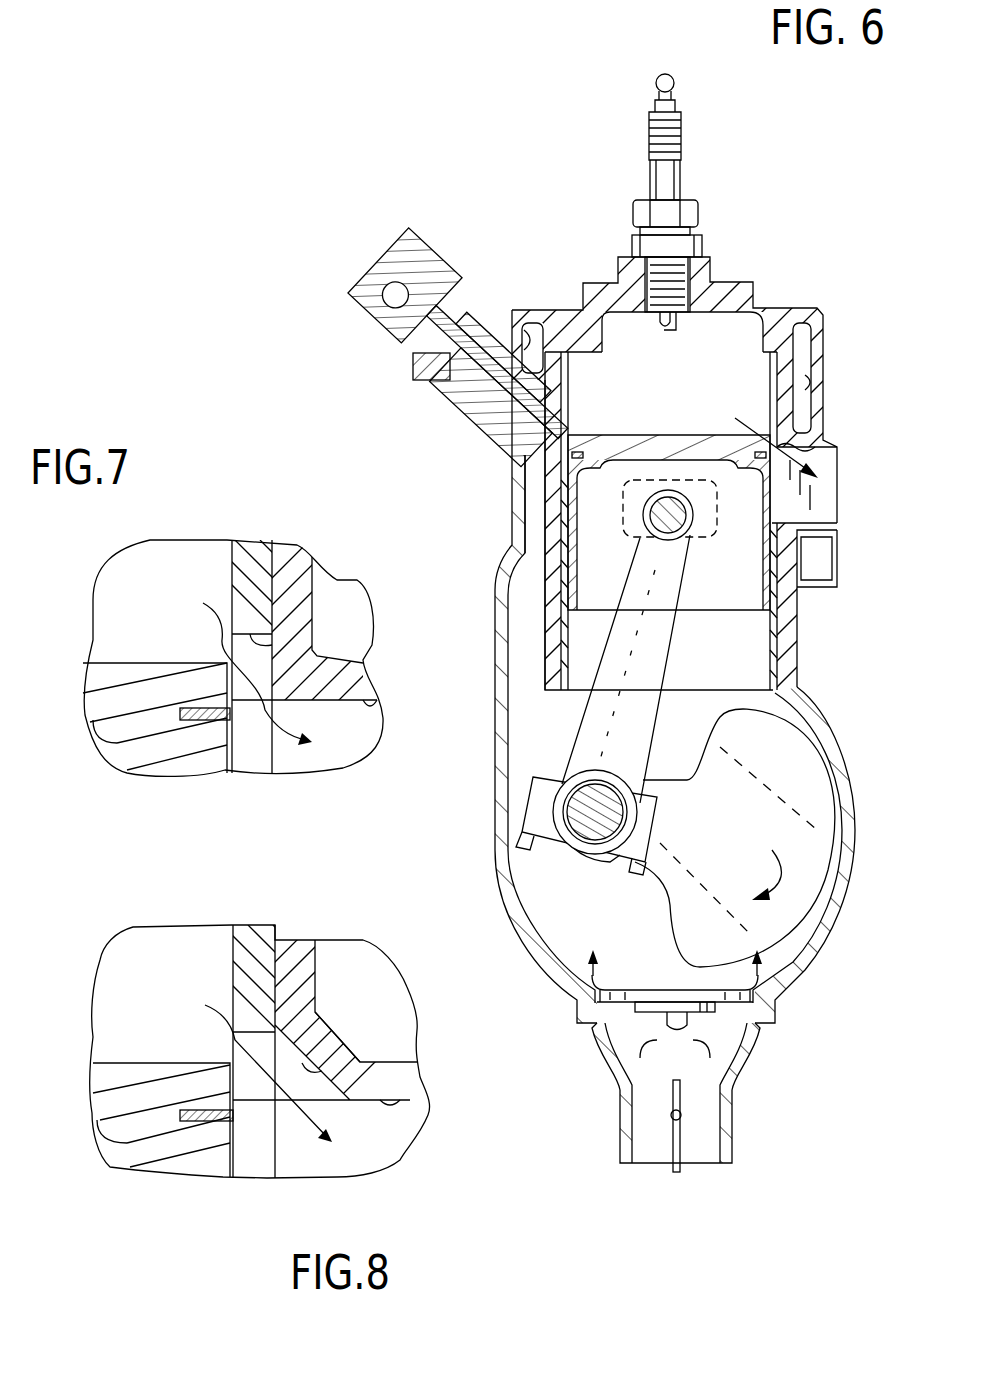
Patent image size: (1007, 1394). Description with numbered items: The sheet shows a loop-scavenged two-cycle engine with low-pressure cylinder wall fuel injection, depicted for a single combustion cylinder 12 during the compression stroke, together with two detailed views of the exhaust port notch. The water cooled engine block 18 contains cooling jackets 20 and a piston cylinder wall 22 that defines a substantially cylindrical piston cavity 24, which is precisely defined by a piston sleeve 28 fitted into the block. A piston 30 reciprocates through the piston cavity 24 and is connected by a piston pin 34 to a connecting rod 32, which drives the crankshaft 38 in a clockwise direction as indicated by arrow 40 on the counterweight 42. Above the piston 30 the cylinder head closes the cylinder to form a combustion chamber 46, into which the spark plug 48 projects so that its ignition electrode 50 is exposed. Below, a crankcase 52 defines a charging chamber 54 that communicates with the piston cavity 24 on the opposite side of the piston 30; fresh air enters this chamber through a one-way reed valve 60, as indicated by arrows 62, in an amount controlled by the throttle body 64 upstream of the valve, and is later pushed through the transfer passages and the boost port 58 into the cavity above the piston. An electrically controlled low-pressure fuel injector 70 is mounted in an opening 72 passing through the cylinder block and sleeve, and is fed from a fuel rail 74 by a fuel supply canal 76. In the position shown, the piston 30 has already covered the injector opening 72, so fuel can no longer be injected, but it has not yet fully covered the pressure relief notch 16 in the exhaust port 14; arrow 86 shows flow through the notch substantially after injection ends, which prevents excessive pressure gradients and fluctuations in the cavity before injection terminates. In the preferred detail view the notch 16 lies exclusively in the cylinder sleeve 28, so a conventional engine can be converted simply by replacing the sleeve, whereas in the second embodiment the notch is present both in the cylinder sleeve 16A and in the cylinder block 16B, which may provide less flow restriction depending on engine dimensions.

In FIG. 6, the combustion cylinder 12 is at (722, 372).
In FIG. 7, the combustion cylinder 12 is at (226, 552).
In FIG. 8, the combustion cylinder 12 is at (260, 1051).
In FIG. 6, the exhaust port 14 is at (806, 453).
In FIG. 7, the exhaust port 14 is at (374, 700).
In FIG. 8, the exhaust port 14 is at (410, 1096).
In FIG. 6, the pressure relief notch 16 is at (778, 445).
In FIG. 7, the pressure relief notch 16 is at (280, 645).
In FIG. 8, the pressure relief notch 16 is at (315, 1013).
In FIG. 8, the cylinder sleeve 16A is at (250, 1013).
In FIG. 8, the cylinder block 16B is at (345, 1048).
In FIG. 6, the engine block 18 is at (815, 312).
In FIG. 7, the engine block 18 is at (300, 568).
In FIG. 8, the engine block 18 is at (293, 938).
In FIG. 6, the cooling jackets 20 is at (519, 323).
In FIG. 6, the piston cylinder wall 22 is at (560, 352).
In FIG. 6, the piston cavity 24 is at (702, 312).
In FIG. 7, the piston cavity 24 is at (119, 616).
In FIG. 8, the piston cavity 24 is at (137, 981).
In FIG. 6, the piston sleeve 28 is at (568, 406).
In FIG. 7, the piston sleeve 28 is at (242, 548).
In FIG. 8, the piston sleeve 28 is at (255, 940).
In FIG. 6, the piston 30 is at (580, 470).
In FIG. 7, the piston 30 is at (143, 760).
In FIG. 8, the piston 30 is at (152, 1160).
In FIG. 6, the connecting rod 32 is at (662, 650).
In FIG. 6, the piston pin 34 is at (684, 531).
In FIG. 6, the crankshaft 38 is at (585, 790).
In FIG. 6, the arrow 40 is at (760, 866).
In FIG. 6, the counterweight 42 is at (720, 762).
In FIG. 6, the combustion chamber 46 is at (701, 277).
In FIG. 6, the spark plug 48 is at (683, 140).
In FIG. 6, the spark plug ignition electrode 50 is at (668, 328).
In FIG. 6, the crankcase 52 is at (819, 935).
In FIG. 6, the charging chamber 54 is at (566, 906).
In FIG. 6, the boost port 58 is at (514, 556).
In FIG. 6, the one-way reed valve 60 is at (639, 991).
In FIG. 6, the arrows 62 is at (675, 1032).
In FIG. 6, the throttle body 64 is at (672, 1112).
In FIG. 6, the fuel injector 70 is at (418, 368).
In FIG. 6, the opening 72 is at (514, 443).
In FIG. 6, the fuel rail 74 is at (412, 236).
In FIG. 6, the fuel supply canal 76 is at (383, 288).
In FIG. 6, the arrow 86 is at (760, 425).
In FIG. 7, the arrow 86 is at (243, 667).
In FIG. 8, the arrow 86 is at (257, 1063).